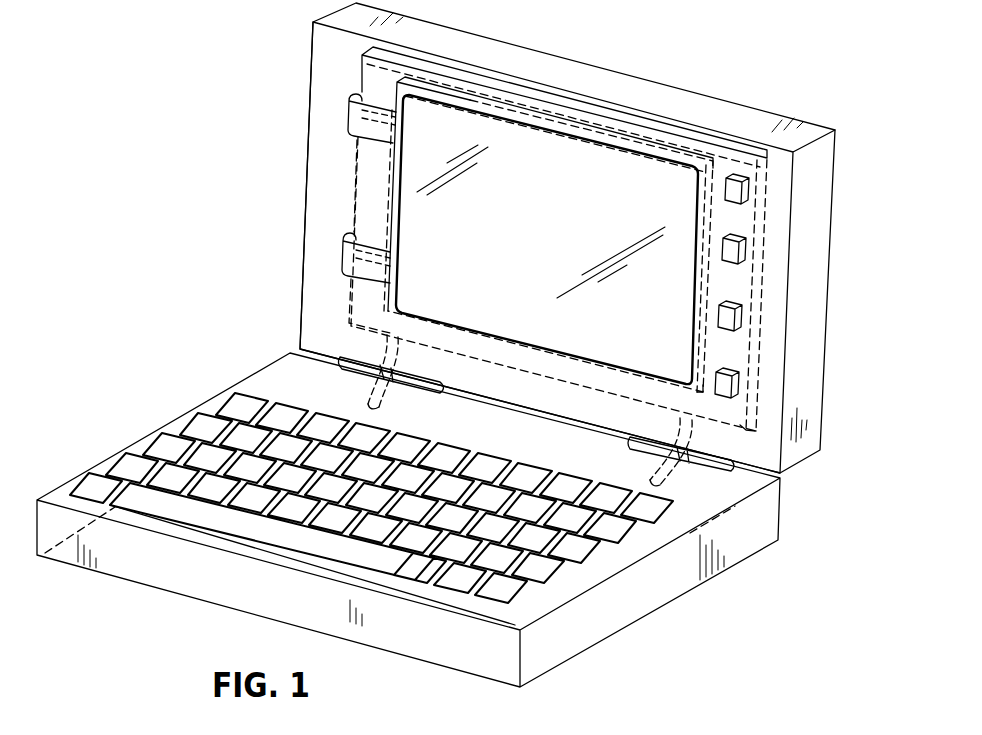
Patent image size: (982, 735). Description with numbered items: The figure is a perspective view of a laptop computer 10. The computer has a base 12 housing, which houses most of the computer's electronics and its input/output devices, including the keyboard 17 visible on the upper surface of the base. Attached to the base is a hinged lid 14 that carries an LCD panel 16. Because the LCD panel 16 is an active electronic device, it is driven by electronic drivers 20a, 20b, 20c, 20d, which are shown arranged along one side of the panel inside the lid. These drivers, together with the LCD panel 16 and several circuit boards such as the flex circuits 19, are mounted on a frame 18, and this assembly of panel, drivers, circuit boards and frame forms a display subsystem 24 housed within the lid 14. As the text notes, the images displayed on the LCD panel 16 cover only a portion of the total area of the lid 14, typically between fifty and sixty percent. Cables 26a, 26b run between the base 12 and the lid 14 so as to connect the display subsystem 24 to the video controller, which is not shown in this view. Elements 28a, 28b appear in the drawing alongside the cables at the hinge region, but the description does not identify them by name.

The laptop computer 10 is at (182, 325).
The base housing 12 is at (158, 568).
The hinged lid 14 is at (836, 146).
The LCD panel 16 is at (502, 138).
The keyboard 17 is at (178, 405).
The frame 18 is at (360, 73).
The flex circuits 19 is at (345, 117).
The electronic driver 20a is at (748, 186).
The electronic driver 20b is at (745, 248).
The electronic driver 20c is at (742, 318).
The electronic driver 20d is at (738, 388).
The display subsystem 24 is at (346, 167).
The cable 26a is at (374, 385).
The cable 26b is at (668, 483).
The stylus 28a is at (413, 385).
The stylus 28b is at (648, 444).